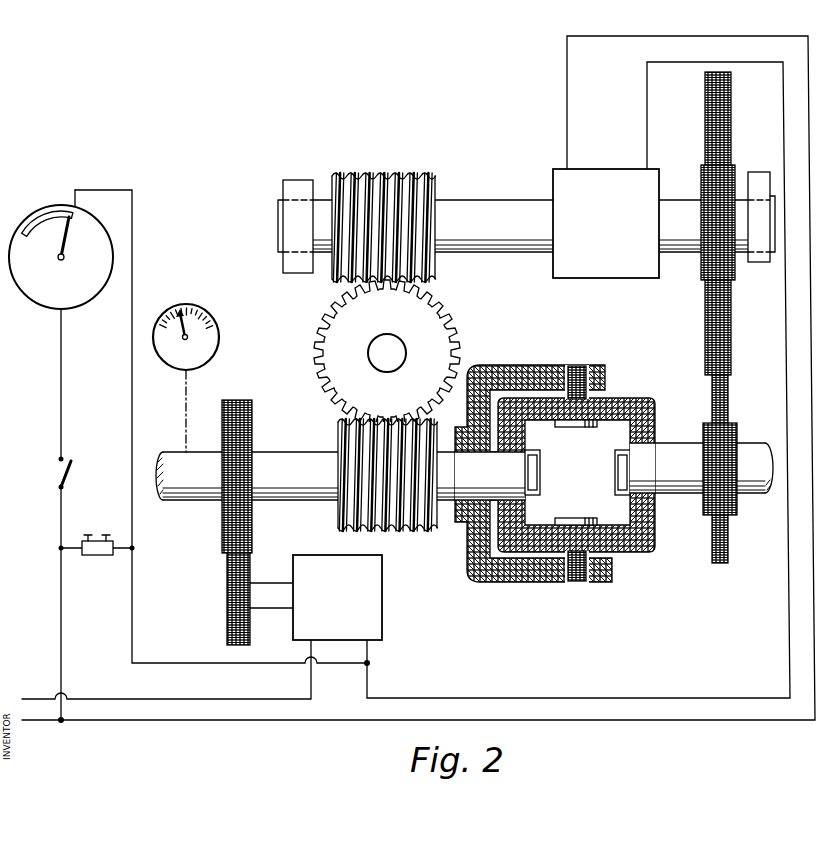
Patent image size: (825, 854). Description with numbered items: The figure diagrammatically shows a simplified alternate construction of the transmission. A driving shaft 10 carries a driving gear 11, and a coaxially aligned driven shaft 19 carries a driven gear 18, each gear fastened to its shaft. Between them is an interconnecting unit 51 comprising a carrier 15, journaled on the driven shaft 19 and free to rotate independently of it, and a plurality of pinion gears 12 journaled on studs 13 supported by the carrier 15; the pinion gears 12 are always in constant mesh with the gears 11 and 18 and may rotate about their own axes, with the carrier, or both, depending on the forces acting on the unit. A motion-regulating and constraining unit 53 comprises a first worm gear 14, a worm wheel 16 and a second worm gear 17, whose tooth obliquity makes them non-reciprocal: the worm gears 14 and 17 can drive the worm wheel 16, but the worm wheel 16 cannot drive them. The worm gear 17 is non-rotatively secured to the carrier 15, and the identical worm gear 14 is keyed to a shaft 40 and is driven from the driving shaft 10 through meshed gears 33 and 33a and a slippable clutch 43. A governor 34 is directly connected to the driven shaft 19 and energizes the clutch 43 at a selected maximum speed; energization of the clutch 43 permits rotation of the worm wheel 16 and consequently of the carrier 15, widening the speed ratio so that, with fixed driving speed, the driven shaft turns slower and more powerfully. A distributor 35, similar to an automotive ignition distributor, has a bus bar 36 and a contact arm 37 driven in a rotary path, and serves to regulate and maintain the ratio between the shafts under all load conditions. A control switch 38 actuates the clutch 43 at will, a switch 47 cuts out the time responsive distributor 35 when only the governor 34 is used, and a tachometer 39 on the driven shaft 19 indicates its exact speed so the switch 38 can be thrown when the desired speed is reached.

The driving shaft 10 is at (748, 443).
The driving gear 11 is at (591, 488).
The pinion gears 12 is at (636, 552).
The studs 13 is at (578, 519).
The first worm gear 14 is at (438, 271).
The carrier 15 is at (538, 582).
The worm wheel 16 is at (457, 331).
The second worm gear 17 is at (427, 533).
The driven gear 18 is at (529, 500).
The driven shaft 19 is at (300, 496).
The meshed gear 33 is at (706, 423).
The meshed gear 33a is at (705, 321).
The governor 34 is at (380, 614).
The distributor 35 is at (84, 300).
The bus bar 36 is at (53, 213).
The contact arm 37 is at (68, 230).
The control switch 38 is at (96, 556).
The tachometer 39 is at (219, 343).
The shaft 40 is at (490, 200).
The clutch 43 is at (653, 278).
The switch 47 is at (72, 474).
The interconnecting unit 51 is at (533, 473).
The motion-regulating and constraining unit 53 is at (386, 353).